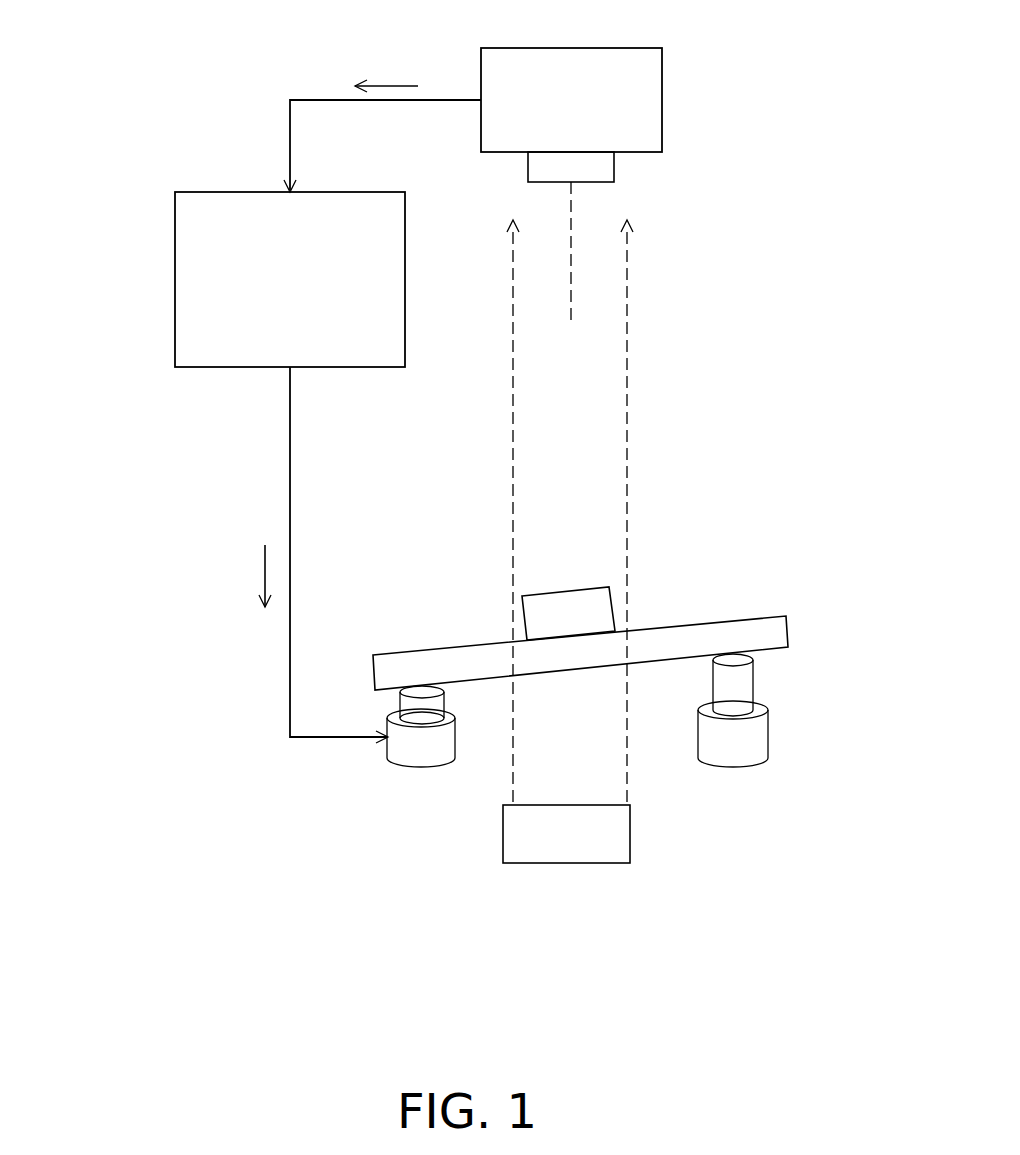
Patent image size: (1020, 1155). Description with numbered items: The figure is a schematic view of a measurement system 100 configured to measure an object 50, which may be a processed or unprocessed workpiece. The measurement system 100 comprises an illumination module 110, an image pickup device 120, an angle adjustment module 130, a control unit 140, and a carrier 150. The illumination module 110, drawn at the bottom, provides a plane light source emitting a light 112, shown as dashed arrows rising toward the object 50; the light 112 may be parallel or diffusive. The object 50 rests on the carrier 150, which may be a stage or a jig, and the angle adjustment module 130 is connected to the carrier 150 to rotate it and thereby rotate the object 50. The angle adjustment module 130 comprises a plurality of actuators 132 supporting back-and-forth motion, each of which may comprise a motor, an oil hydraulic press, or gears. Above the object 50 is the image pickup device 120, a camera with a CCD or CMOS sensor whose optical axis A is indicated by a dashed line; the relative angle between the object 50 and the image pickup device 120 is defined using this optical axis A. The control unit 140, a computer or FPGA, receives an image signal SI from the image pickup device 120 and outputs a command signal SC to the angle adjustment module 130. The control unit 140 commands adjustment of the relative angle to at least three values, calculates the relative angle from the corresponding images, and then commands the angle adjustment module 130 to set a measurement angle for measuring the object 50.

The measurement system 100 is at (857, 982).
The illumination module 110 is at (613, 838).
The light 112 is at (627, 343).
The image pickup device 120 is at (653, 94).
The angle adjustment module 130 is at (710, 740).
The actuator 132 is at (405, 703).
The control unit 140 is at (175, 281).
The carrier 150 is at (757, 625).
The object 50 is at (577, 607).
The optical axis A is at (572, 216).
The image signal SI is at (392, 82).
The command signal SC is at (265, 568).